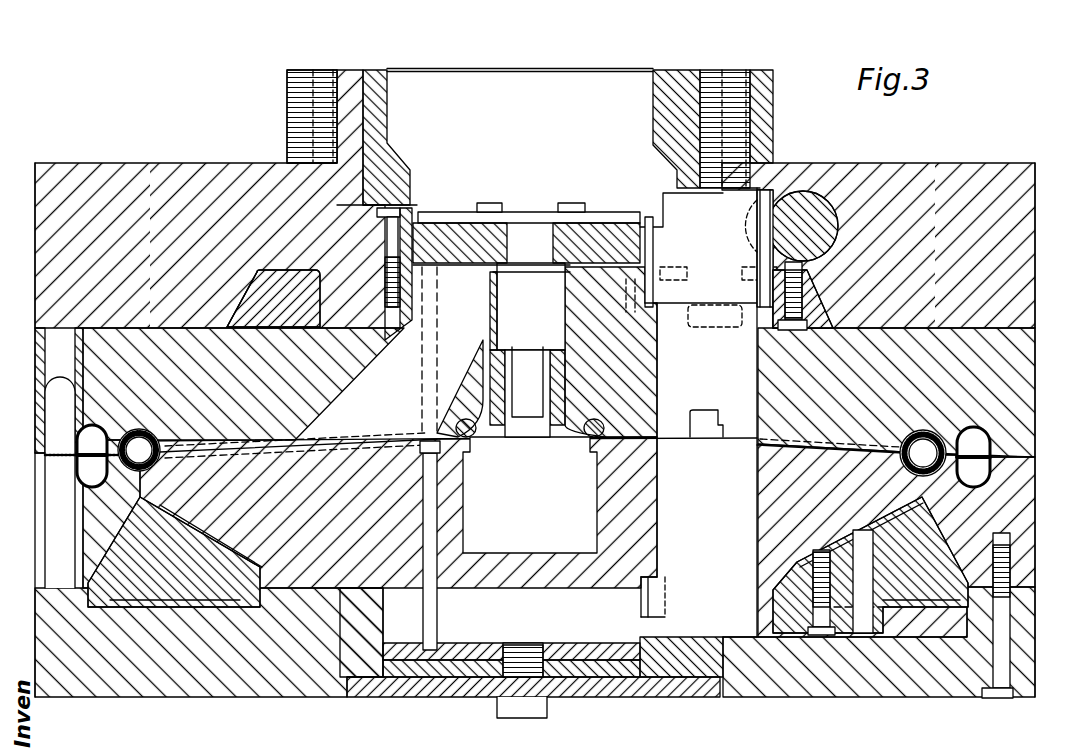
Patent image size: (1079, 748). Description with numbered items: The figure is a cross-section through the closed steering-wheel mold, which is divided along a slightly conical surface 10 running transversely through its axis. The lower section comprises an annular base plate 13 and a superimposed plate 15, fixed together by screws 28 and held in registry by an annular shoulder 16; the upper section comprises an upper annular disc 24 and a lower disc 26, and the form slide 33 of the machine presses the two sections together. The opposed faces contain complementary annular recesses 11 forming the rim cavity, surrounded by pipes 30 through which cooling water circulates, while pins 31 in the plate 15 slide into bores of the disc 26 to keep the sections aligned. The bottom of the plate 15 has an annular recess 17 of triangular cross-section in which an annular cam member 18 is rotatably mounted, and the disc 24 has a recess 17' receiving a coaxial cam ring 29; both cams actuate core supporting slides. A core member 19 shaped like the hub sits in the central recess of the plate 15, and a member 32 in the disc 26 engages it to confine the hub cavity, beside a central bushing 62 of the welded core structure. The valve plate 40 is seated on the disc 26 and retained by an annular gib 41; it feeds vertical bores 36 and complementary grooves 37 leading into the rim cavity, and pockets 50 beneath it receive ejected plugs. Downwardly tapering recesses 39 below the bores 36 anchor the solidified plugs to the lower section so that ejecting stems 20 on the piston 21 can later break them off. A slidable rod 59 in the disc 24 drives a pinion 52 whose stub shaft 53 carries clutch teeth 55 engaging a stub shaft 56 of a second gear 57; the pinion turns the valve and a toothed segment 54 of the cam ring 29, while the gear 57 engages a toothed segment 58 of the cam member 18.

The slightly conical surface 10 is at (333, 440).
The annular recesses 11 is at (147, 427).
The annular base plate 13 is at (258, 683).
The superimposed plate 15 is at (1022, 512).
The annular shoulder 16 is at (387, 592).
The annular recess 17 is at (158, 552).
The recess 17' is at (222, 224).
The annular cam member 18 is at (158, 593).
The core member 19 is at (543, 542).
The ejecting stems 20 is at (436, 622).
The piston 21 is at (427, 670).
The upper annular disc 24 is at (142, 185).
The lower disc 26 is at (820, 307).
The screws 28 is at (1003, 647).
The coaxial cam ring 29 is at (267, 283).
The pipes 30 is at (982, 442).
The pins 31 is at (52, 565).
The member 32 is at (537, 345).
The form slide 33 is at (743, 127).
The vertical bores 36 is at (423, 370).
The complementary grooves 37 is at (248, 437).
The downwardly tapering recesses 39 is at (440, 447).
The valve plate 40 is at (460, 233).
The annular gib 41 is at (418, 210).
The pockets 50 is at (398, 418).
The pinion 52 is at (688, 240).
The stub shaft 53 is at (693, 337).
The toothed segment 54 is at (812, 262).
The clutch teeth 55 is at (727, 412).
The stub shaft 56 is at (673, 495).
The second gear 57 is at (680, 602).
The toothed segment 58 is at (783, 628).
The slidable rod 59 is at (812, 196).
The central bushing 62 is at (514, 432).